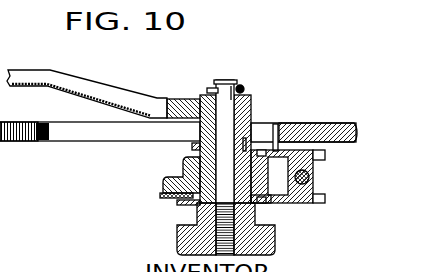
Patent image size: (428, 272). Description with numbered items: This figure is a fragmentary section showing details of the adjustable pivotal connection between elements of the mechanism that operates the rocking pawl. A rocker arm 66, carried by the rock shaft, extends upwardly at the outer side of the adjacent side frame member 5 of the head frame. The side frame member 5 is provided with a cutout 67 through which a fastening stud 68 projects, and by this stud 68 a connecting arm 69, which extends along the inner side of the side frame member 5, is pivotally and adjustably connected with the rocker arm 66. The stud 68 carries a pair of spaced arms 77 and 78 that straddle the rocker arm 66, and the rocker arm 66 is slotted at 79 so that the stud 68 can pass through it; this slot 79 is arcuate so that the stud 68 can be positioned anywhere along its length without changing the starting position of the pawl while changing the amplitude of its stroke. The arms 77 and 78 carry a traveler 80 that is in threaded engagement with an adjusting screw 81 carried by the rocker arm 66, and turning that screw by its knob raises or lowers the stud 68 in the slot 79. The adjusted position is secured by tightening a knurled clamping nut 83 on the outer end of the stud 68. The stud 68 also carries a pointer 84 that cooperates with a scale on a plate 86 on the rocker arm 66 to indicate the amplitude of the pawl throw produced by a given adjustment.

The side frame member 5 is at (330, 123).
The rocker arm 66 is at (182, 170).
The cutout 67 is at (88, 133).
The fastening stud 68 is at (230, 83).
The connecting arm 69 is at (106, 59).
The spaced arm 77 is at (287, 123).
The spaced arm 78 is at (265, 198).
The slot 79 is at (197, 149).
The traveler 80 is at (315, 189).
The adjusting screw 81 is at (310, 177).
The clamping nut 83 is at (277, 238).
The pointer 84 is at (187, 205).
The plate 86 is at (160, 197).